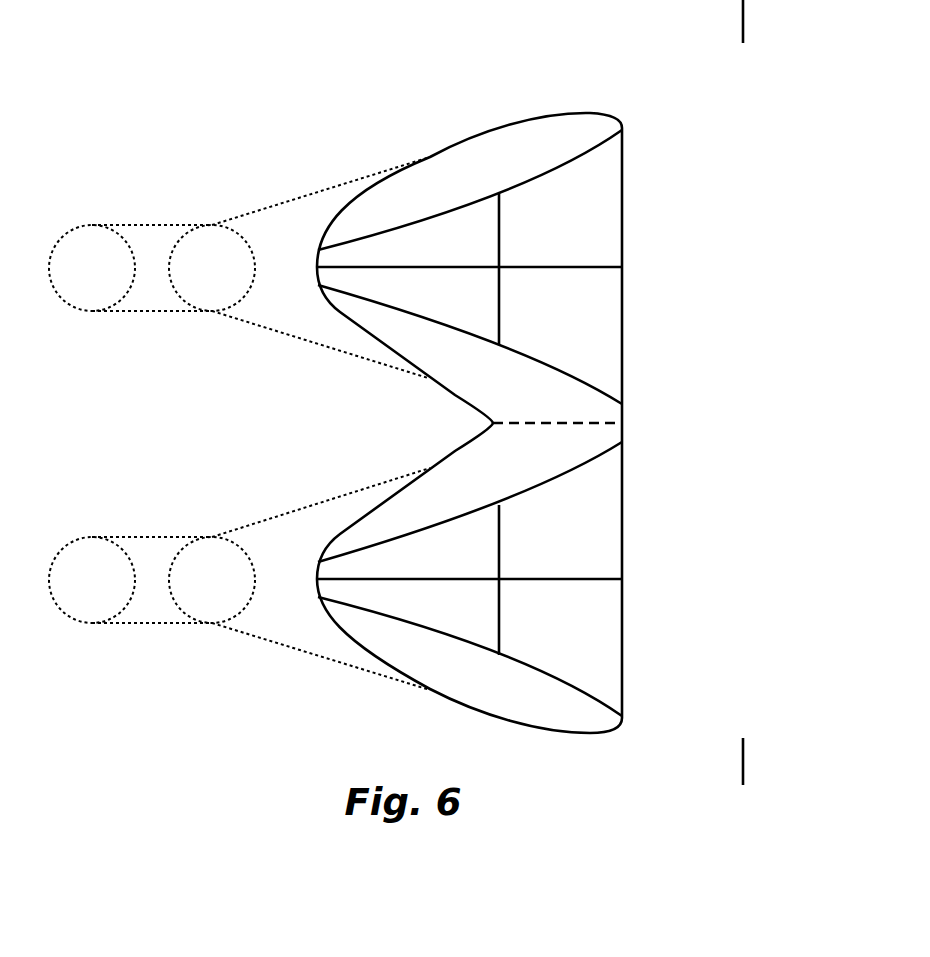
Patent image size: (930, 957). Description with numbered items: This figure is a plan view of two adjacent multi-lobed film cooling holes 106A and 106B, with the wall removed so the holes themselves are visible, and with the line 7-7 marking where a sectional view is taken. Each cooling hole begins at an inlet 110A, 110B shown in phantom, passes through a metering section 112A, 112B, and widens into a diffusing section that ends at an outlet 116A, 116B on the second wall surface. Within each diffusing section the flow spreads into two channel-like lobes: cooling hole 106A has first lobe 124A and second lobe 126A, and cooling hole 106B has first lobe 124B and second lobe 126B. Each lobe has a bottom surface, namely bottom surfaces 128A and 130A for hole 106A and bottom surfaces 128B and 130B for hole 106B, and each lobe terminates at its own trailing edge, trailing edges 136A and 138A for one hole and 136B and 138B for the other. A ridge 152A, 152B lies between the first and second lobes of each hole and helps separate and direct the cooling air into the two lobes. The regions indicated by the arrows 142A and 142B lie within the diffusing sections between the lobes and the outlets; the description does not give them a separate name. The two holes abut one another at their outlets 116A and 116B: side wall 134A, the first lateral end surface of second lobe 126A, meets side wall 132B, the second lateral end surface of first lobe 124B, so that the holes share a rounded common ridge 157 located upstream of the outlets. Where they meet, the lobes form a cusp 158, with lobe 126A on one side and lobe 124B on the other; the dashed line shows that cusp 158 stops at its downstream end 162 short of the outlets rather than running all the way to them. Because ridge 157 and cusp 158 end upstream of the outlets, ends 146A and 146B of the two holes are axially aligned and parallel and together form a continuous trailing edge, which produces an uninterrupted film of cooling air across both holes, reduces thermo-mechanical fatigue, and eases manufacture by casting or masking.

The section line 7- 7 is at (754, 25).
The first multi-lobed cooling hole 106A is at (293, 229).
The second multi-lobed cooling hole 106B is at (293, 541).
The inlet 110A is at (84, 298).
The inlet 110B is at (84, 610).
The metering section 112A is at (152, 298).
The metering section 112B is at (152, 610).
The outlet 116A is at (625, 165).
The outlet 116B is at (625, 493).
The first lobe 124A is at (577, 132).
The first lobe (third lobe) 124B is at (622, 429).
The second lobe 126A is at (594, 410).
The second lobe 126B is at (425, 656).
The bottom surface of first lobe 128A is at (538, 161).
The bottom surface of first lobe 128B is at (397, 516).
The bottom surface of second lobe 130A is at (492, 391).
The bottom surface of second lobe 130B is at (474, 696).
The side wall (second lateral end surface) 132B is at (476, 447).
The side wall (first lateral end surface) 134A is at (468, 405).
The trailing edge of first lobe 136A is at (622, 128).
The trailing edge of first lobe 136B is at (622, 440).
The trailing edge of second lobe 138A is at (622, 402).
The trailing edge of second lobe 138B is at (622, 716).
The rear wall 142A is at (594, 206).
The rear wall 142B is at (594, 536).
The end of cooling hole 146A is at (622, 338).
The end of cooling hole 146B is at (622, 650).
The ridge 152A is at (423, 267).
The ridge 152B is at (423, 579).
The ridge (common wall) 157 is at (547, 424).
The cusp 158 is at (568, 420).
The downstream end of cusp 162 is at (587, 425).